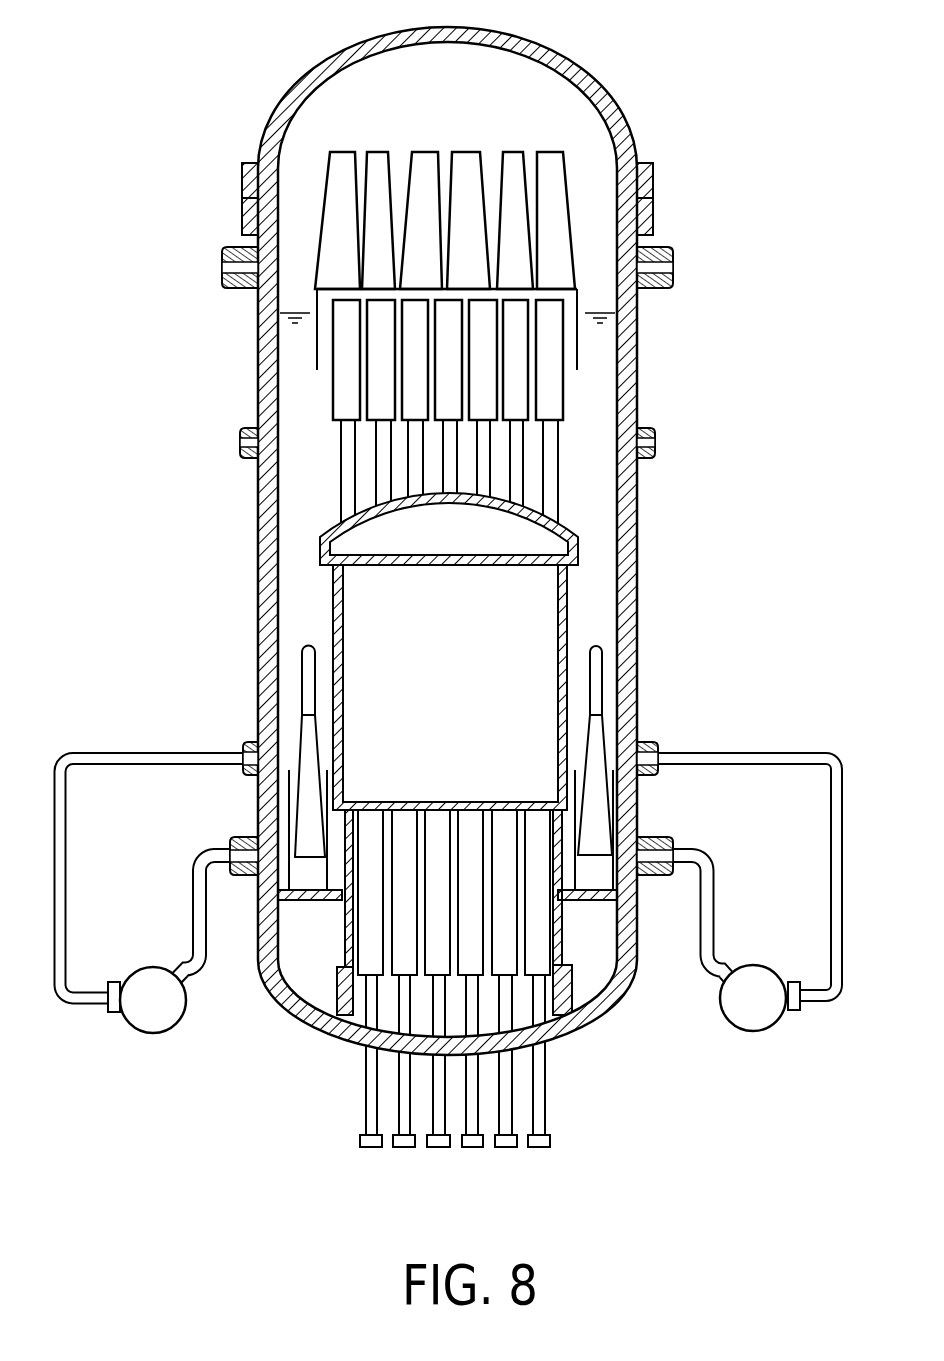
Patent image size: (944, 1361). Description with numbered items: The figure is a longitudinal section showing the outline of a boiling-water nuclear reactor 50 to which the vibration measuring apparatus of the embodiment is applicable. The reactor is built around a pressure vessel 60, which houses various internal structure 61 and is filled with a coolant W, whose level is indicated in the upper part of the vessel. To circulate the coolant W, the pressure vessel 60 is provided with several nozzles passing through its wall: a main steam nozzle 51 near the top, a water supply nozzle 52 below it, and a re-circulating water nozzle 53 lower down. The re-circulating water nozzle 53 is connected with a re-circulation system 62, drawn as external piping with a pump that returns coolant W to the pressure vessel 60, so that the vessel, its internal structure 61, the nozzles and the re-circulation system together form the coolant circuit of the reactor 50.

The nuclear reactor 50 is at (258, 70).
The pressure vessel 60 is at (272, 132).
The internal structure 61 is at (262, 806).
The main steam nozzle 51 is at (222, 258).
The water supply nozzle 52 is at (241, 432).
The re-circulating water nozzle 53 is at (656, 740).
The re-circulation system 62 is at (108, 753).
The coolant W is at (310, 495).